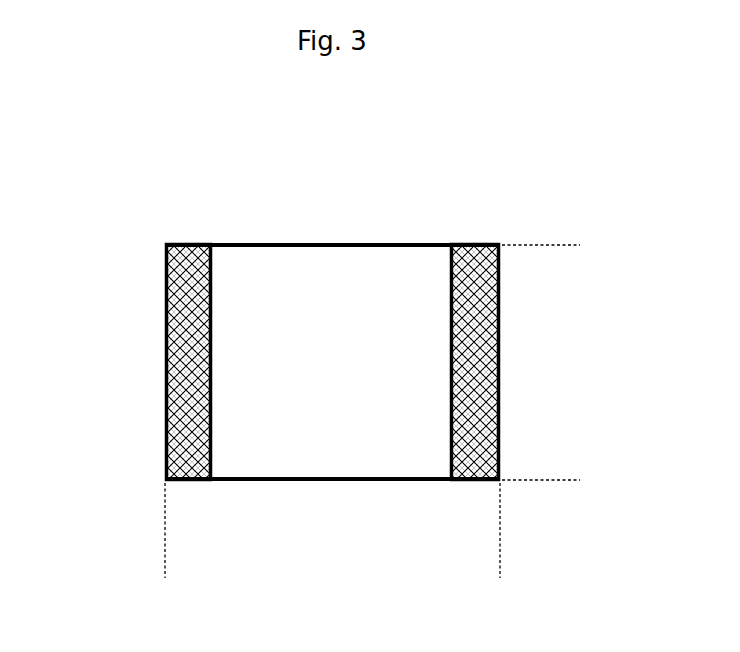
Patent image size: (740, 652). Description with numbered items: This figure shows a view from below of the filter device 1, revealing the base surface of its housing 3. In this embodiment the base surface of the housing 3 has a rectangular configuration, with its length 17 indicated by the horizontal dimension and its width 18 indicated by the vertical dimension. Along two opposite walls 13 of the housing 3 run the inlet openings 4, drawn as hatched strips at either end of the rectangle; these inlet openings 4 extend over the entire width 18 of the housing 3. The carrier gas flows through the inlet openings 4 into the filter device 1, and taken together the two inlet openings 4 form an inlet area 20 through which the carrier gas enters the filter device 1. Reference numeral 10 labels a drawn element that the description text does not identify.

The filter device 1 is at (162, 212).
The ring body 10 is at (296, 329).
The walls 13 is at (165, 363).
The inlet openings 4 is at (184, 413).
The housing 3 is at (190, 483).
The inlet area 20 is at (466, 257).
The length 17 is at (499, 571).
The width 18 is at (567, 247).